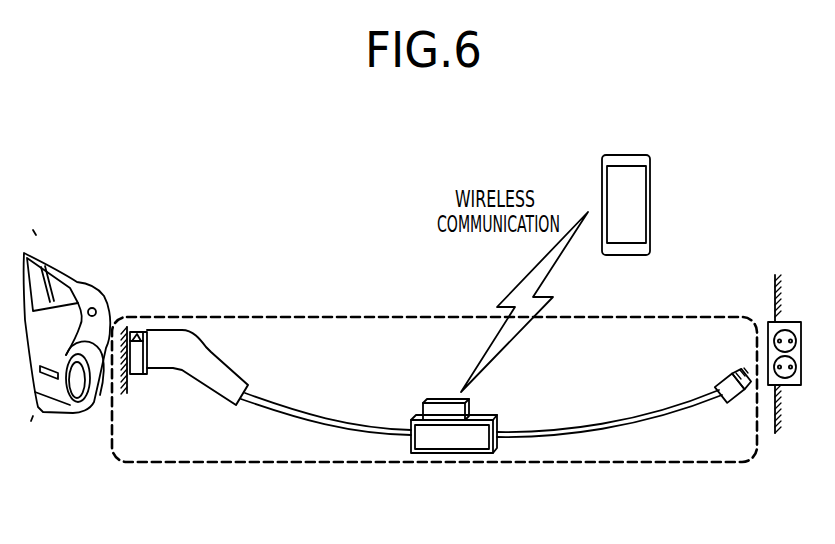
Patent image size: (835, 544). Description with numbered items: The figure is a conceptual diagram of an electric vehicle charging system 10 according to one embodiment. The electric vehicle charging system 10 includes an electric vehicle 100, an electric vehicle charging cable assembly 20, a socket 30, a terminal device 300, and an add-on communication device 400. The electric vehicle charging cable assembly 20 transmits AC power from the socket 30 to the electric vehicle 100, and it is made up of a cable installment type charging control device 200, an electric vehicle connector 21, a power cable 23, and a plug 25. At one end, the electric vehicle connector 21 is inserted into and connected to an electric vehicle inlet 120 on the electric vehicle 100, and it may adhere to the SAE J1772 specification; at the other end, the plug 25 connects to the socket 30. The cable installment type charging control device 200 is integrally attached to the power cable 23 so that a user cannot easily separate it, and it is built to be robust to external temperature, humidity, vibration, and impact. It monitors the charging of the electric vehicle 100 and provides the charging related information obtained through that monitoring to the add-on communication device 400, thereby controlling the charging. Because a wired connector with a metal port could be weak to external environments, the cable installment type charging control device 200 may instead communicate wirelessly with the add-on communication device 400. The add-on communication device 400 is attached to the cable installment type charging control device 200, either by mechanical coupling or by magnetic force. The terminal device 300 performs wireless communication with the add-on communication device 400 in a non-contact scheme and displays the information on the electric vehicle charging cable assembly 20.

The electric vehicle charging system 10 is at (63, 123).
The electric vehicle charging cable assembly 20 is at (423, 316).
The electric vehicle connector 21 is at (230, 380).
The power cable 23 is at (340, 424).
The plug 25 is at (721, 379).
The socket 30 is at (796, 321).
The electric vehicle 100 is at (63, 267).
The electric vehicle inlet 120 is at (93, 307).
The cable installment type charging control device 200 is at (452, 455).
The terminal device 300 is at (626, 154).
The add-on communication device 400 is at (440, 398).